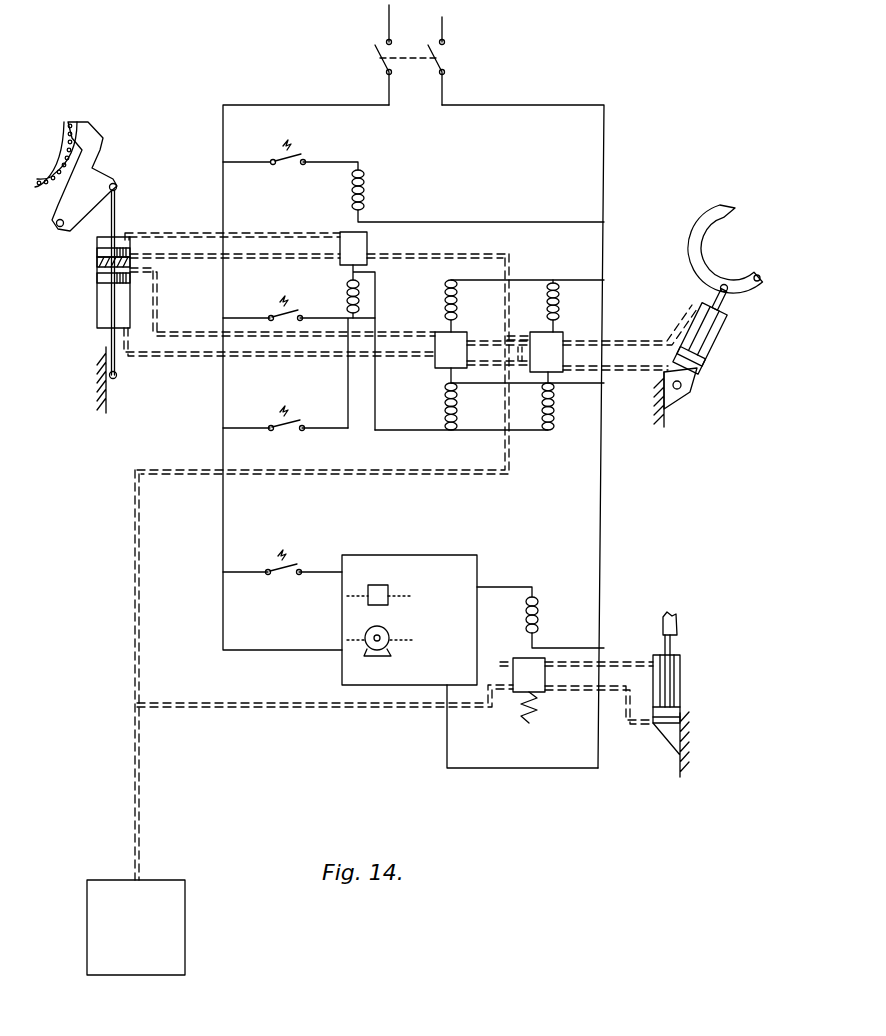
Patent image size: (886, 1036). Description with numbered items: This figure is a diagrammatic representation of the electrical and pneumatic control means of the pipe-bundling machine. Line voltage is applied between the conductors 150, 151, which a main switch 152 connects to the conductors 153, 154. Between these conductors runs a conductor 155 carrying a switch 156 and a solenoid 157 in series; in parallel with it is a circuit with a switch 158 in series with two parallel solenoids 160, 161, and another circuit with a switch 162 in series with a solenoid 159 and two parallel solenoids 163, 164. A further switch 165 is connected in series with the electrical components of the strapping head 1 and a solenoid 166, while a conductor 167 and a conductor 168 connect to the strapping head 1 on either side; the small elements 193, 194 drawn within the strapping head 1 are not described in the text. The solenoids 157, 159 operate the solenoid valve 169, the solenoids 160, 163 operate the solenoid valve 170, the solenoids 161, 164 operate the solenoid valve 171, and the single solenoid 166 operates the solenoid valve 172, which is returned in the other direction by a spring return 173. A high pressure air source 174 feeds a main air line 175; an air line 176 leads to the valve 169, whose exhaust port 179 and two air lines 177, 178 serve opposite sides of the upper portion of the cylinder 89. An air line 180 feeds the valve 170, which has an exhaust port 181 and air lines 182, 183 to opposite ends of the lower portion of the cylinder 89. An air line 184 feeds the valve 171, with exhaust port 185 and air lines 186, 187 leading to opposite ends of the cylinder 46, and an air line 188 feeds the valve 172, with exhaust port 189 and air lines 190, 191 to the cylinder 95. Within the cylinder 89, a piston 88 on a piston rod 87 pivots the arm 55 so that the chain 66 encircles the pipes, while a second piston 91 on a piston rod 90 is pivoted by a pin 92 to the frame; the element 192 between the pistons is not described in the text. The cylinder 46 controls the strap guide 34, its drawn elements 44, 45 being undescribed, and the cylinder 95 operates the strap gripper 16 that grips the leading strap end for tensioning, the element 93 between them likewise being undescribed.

The strapping head 1 is at (440, 562).
The strap gripper 16 is at (675, 618).
The strap guide 34 is at (708, 214).
The piston rod 44 is at (730, 301).
The pivot bracket 45 is at (700, 376).
The cylinder 46 is at (718, 352).
The arm 55 is at (102, 142).
The chain 66 is at (63, 150).
The piston rod 87 is at (117, 215).
The piston 88 is at (97, 252).
The cylinder 89 is at (97, 312).
The piston rod 90 is at (106, 358).
The piston 91 is at (97, 280).
The pin 92 is at (116, 380).
The plunger rod 93 is at (675, 645).
The cylinder 95 is at (682, 680).
The conductor 150 is at (385, 26).
The conductor 151 is at (447, 26).
The main switch 152 is at (446, 63).
The conductor 153 is at (223, 112).
The conductor 154 is at (606, 120).
The conductor 155 is at (250, 162).
The switch 156 is at (303, 152).
The solenoid 157 is at (366, 187).
The switch 158 is at (303, 312).
The solenoid 159 is at (299, 362).
The solenoid 160 is at (458, 300).
The solenoid 161 is at (559, 300).
The switch 162 is at (298, 422).
The solenoid 163 is at (446, 418).
The solenoid 164 is at (552, 432).
The switch 165 is at (295, 562).
The solenoid 166 is at (540, 600).
The conductor 167 is at (253, 652).
The conductor 168 is at (555, 770).
The solenoid valve 169 is at (368, 257).
The solenoid valve 170 is at (437, 366).
The solenoid valve 171 is at (565, 353).
The solenoid valve 172 is at (547, 690).
The spring return 173 is at (532, 722).
The high pressure air source 174 is at (175, 880).
The main air line 175 is at (133, 578).
The air line 176 is at (507, 258).
The air line 177 is at (248, 260).
The air line 178 is at (250, 233).
The exhaust port 179 is at (368, 240).
The air line 180 is at (498, 331).
The exhaust port 181 is at (498, 373).
The air line 182 is at (255, 337).
The air line 183 is at (255, 357).
The air line 184 is at (518, 338).
The exhaust port 185 is at (527, 350).
The air line 186 is at (630, 342).
The air line 187 is at (632, 372).
The air line 188 is at (278, 712).
The exhaust port 189 is at (503, 662).
The air line 190 is at (612, 663).
The air line 191 is at (632, 725).
The piston seal 192 is at (97, 265).
The motor 193 is at (385, 648).
The switch element 194 is at (390, 598).